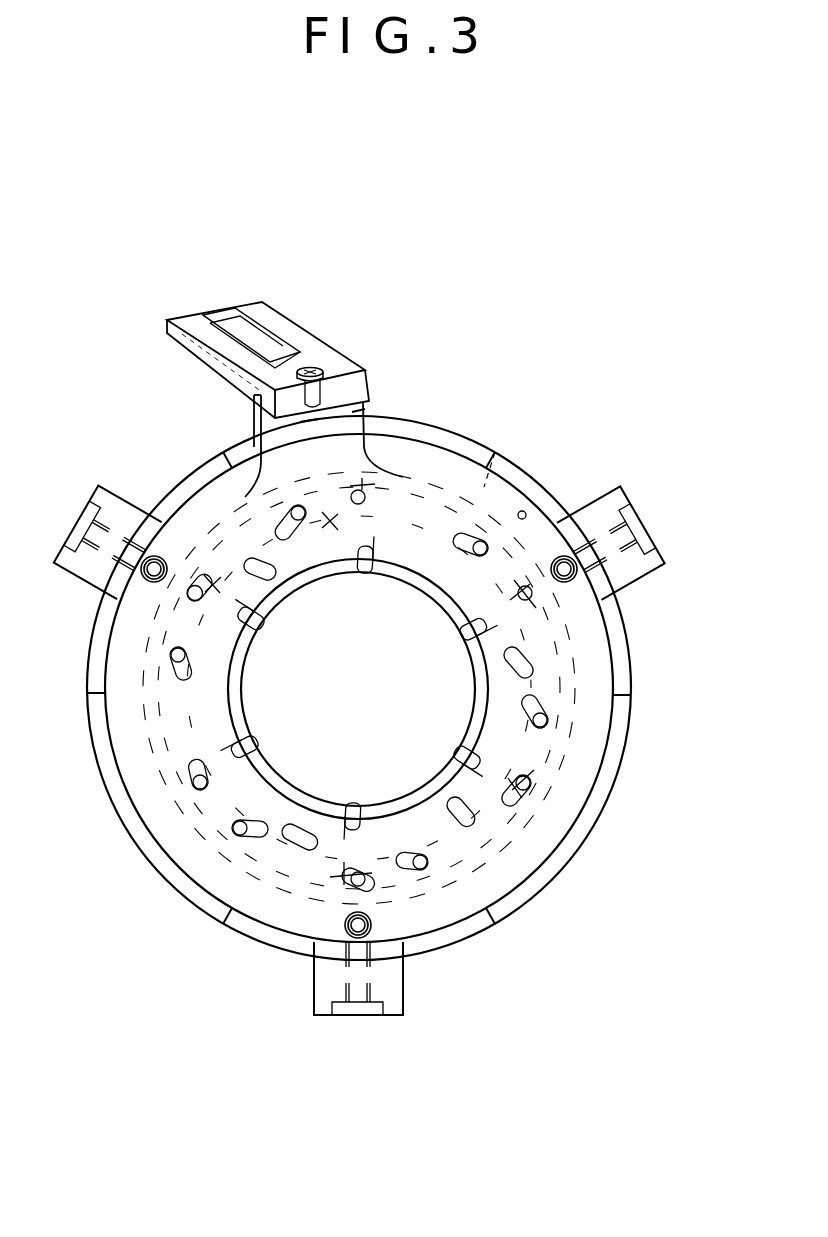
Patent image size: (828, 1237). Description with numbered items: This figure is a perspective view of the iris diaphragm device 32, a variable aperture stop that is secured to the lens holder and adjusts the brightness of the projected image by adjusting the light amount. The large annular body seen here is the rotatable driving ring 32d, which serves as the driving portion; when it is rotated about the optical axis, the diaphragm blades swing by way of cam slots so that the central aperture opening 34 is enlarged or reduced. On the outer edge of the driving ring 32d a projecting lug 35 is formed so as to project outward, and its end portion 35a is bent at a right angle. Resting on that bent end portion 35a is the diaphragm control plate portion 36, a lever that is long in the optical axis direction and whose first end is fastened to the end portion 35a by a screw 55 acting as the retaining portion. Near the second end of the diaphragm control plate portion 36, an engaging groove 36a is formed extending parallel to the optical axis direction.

The iris diaphragm device 32 is at (441, 418).
The driving ring 32d is at (500, 463).
The aperture opening 34 is at (423, 593).
The projecting lug 35 is at (240, 420).
The end portion 35a is at (256, 393).
The diaphragm control plate portion 36 is at (206, 298).
The engaging groove 36a is at (280, 345).
The screw 55 is at (319, 370).